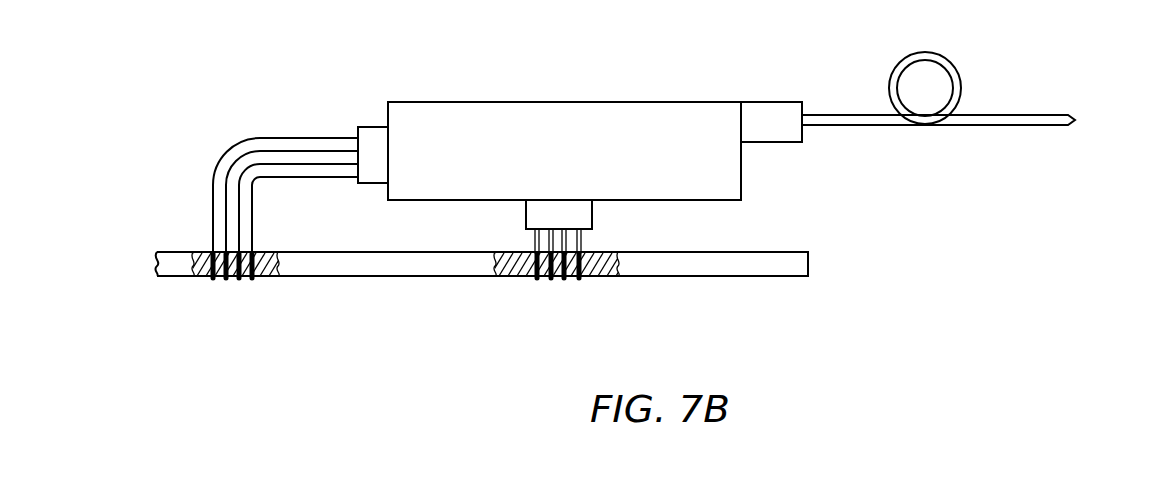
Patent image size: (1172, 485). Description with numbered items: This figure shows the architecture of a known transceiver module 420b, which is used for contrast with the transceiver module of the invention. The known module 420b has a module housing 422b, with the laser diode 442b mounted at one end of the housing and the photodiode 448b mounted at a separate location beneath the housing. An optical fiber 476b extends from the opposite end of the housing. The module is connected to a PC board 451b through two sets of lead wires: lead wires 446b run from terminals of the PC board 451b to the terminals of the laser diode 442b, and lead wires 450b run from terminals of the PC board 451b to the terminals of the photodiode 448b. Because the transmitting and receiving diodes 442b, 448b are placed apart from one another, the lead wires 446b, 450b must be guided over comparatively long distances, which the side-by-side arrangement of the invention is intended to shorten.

The transceiver module 420b is at (777, 72).
The module housing 422b is at (477, 102).
The laser diode 442b is at (372, 127).
The lead wires 446b is at (233, 295).
The photodiode 448b is at (593, 215).
The lead wires 450b is at (557, 297).
The PC board 451b is at (808, 263).
The optical fiber 476b is at (1012, 113).